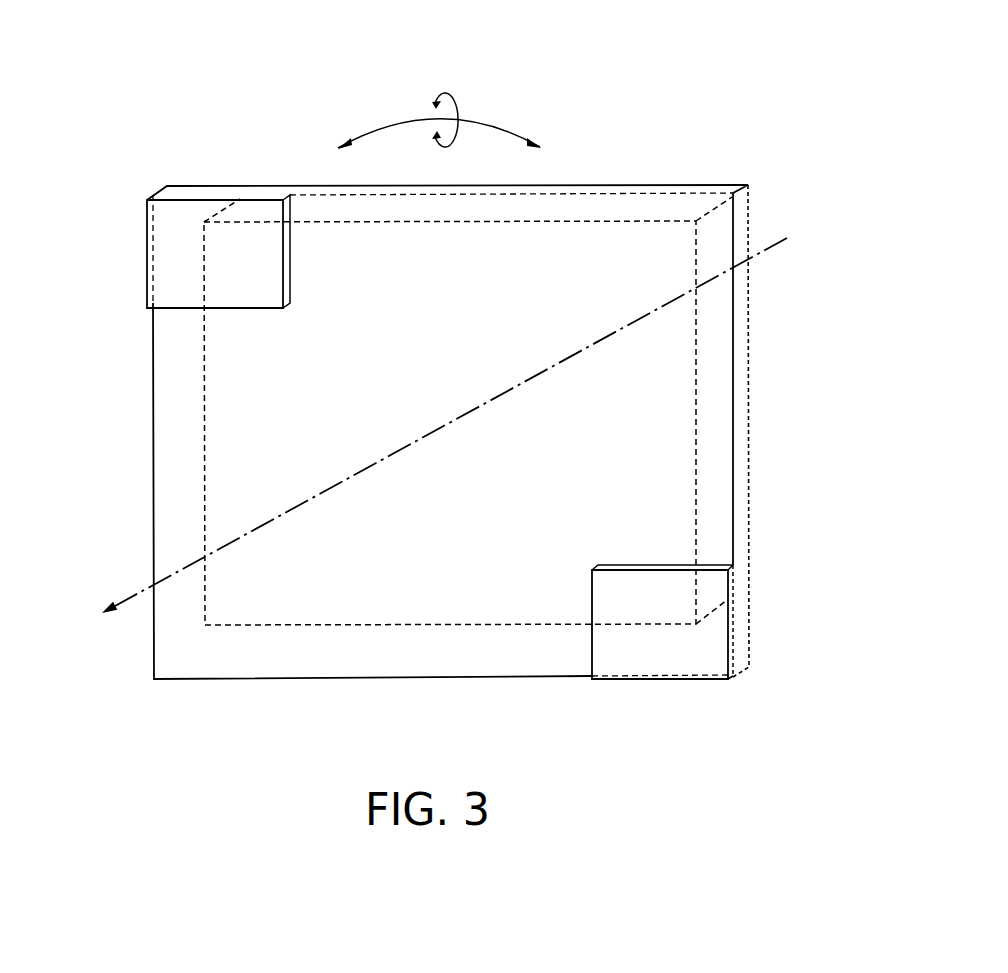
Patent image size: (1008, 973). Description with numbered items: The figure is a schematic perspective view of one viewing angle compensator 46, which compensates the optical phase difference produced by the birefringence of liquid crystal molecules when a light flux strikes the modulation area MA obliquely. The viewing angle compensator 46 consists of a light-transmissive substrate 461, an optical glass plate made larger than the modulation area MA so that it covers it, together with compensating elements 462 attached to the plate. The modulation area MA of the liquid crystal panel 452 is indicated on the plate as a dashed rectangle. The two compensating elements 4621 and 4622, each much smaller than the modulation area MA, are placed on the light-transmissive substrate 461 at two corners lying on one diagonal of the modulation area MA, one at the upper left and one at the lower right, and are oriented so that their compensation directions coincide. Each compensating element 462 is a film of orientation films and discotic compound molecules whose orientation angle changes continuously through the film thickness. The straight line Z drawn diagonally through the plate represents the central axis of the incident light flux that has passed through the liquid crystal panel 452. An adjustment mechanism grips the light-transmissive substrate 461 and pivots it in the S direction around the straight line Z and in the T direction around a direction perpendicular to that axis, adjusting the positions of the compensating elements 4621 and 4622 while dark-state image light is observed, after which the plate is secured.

The viewing angle compensator 46 is at (404, 432).
The light-transmissive substrate 461 is at (160, 532).
The compensating elements 462 is at (451, 437).
The compensating element 4621 is at (167, 251).
The compensating element 4622 is at (725, 622).
The liquid crystal panel 452 is at (722, 368).
The modulation area MA is at (524, 411).
The straight line Z is at (352, 477).
The T direction T is at (444, 92).
The S direction S is at (487, 125).